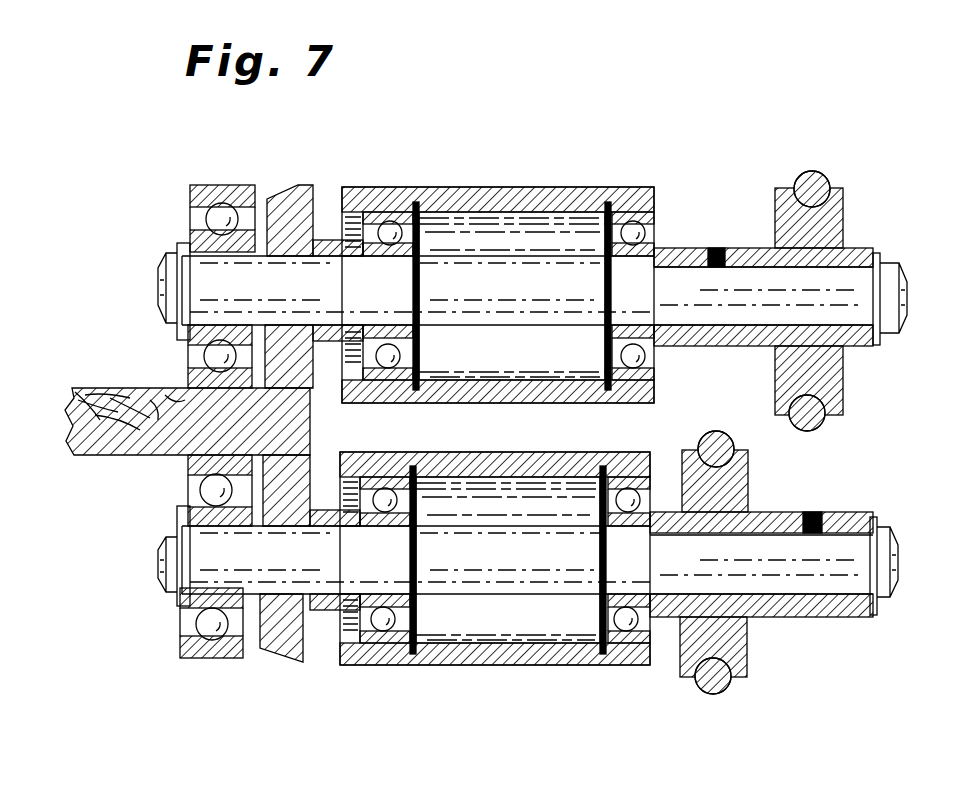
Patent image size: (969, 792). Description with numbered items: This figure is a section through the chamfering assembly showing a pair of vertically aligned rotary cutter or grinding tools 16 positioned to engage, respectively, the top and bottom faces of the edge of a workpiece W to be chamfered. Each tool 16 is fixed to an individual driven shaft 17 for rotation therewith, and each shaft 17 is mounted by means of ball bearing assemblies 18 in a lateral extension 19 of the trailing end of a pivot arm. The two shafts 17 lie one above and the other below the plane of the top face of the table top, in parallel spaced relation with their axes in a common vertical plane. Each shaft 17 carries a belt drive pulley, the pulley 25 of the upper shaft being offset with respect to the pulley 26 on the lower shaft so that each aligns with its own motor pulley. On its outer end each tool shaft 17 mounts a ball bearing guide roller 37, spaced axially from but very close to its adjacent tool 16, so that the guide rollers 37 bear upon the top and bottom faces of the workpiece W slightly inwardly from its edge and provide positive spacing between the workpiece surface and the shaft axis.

The rotary cutter or grinding tool 16 is at (297, 188).
The driven shaft 17 is at (512, 322).
The ball bearing assembly 18 is at (394, 207).
The lateral extension 19 is at (510, 190).
The pulley 25 is at (845, 213).
The pulley 26 is at (748, 477).
The ball bearing guide roller 37 is at (216, 186).
The workpiece W is at (107, 390).